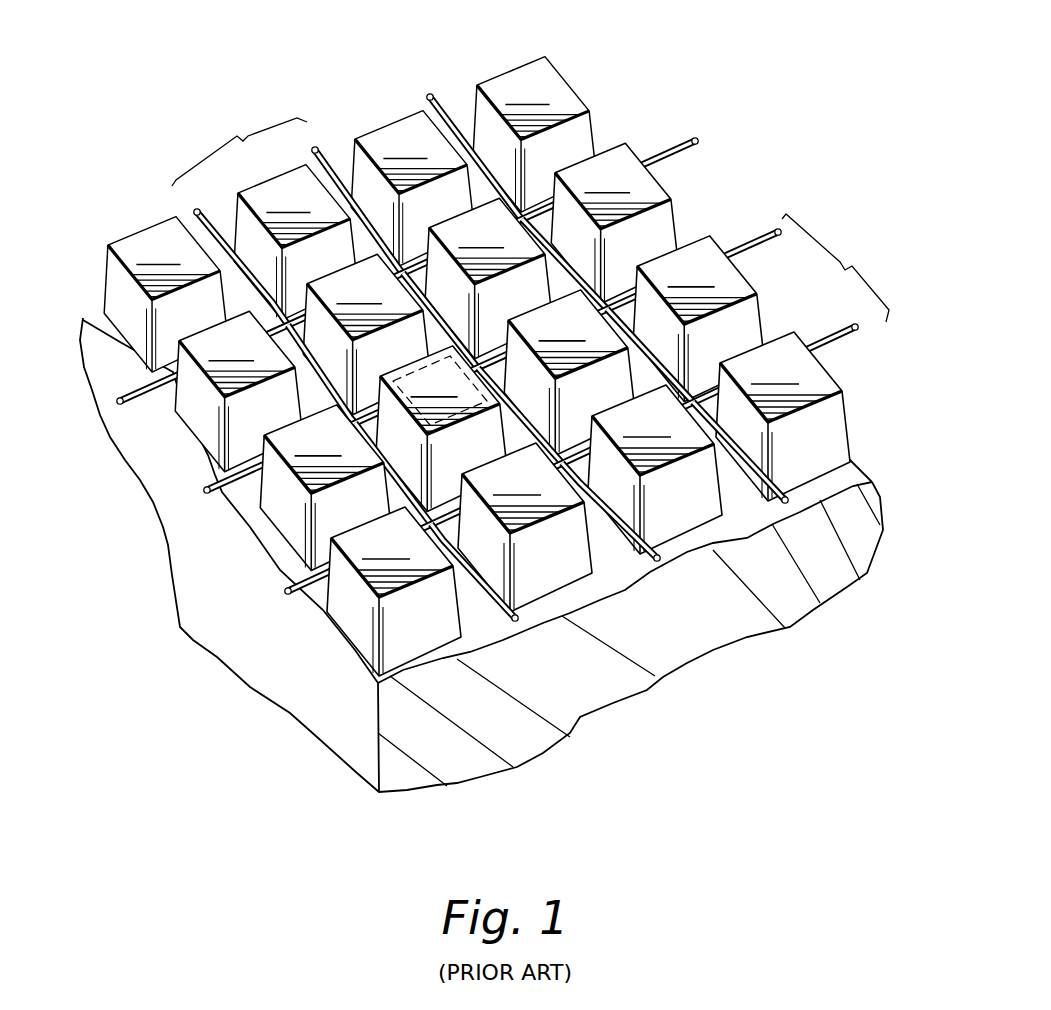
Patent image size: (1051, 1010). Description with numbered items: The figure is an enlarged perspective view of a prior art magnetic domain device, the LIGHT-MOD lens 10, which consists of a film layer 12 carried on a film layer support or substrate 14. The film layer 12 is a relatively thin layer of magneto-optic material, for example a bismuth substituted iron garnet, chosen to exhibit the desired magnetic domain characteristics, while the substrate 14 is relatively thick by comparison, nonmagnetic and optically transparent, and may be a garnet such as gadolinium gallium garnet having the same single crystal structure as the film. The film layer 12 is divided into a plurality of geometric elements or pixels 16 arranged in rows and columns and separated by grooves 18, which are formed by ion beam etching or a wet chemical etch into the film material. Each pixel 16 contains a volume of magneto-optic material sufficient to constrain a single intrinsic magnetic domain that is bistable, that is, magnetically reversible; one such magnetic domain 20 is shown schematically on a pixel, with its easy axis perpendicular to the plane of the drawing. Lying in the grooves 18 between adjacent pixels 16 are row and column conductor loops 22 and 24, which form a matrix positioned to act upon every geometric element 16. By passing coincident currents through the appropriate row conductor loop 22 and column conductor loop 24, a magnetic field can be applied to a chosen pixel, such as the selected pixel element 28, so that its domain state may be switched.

The LIGHT-MOD lens 10 is at (475, 405).
The film layer 12 is at (828, 448).
The substrate 14 is at (110, 381).
The geometric elements 16 is at (703, 523).
The grooves 18 is at (288, 591).
The magnetic domain 20 is at (441, 429).
The row conductor loop 22 is at (239, 149).
The column conductor loop 24 is at (835, 268).
The selected pixel element 28 is at (435, 497).